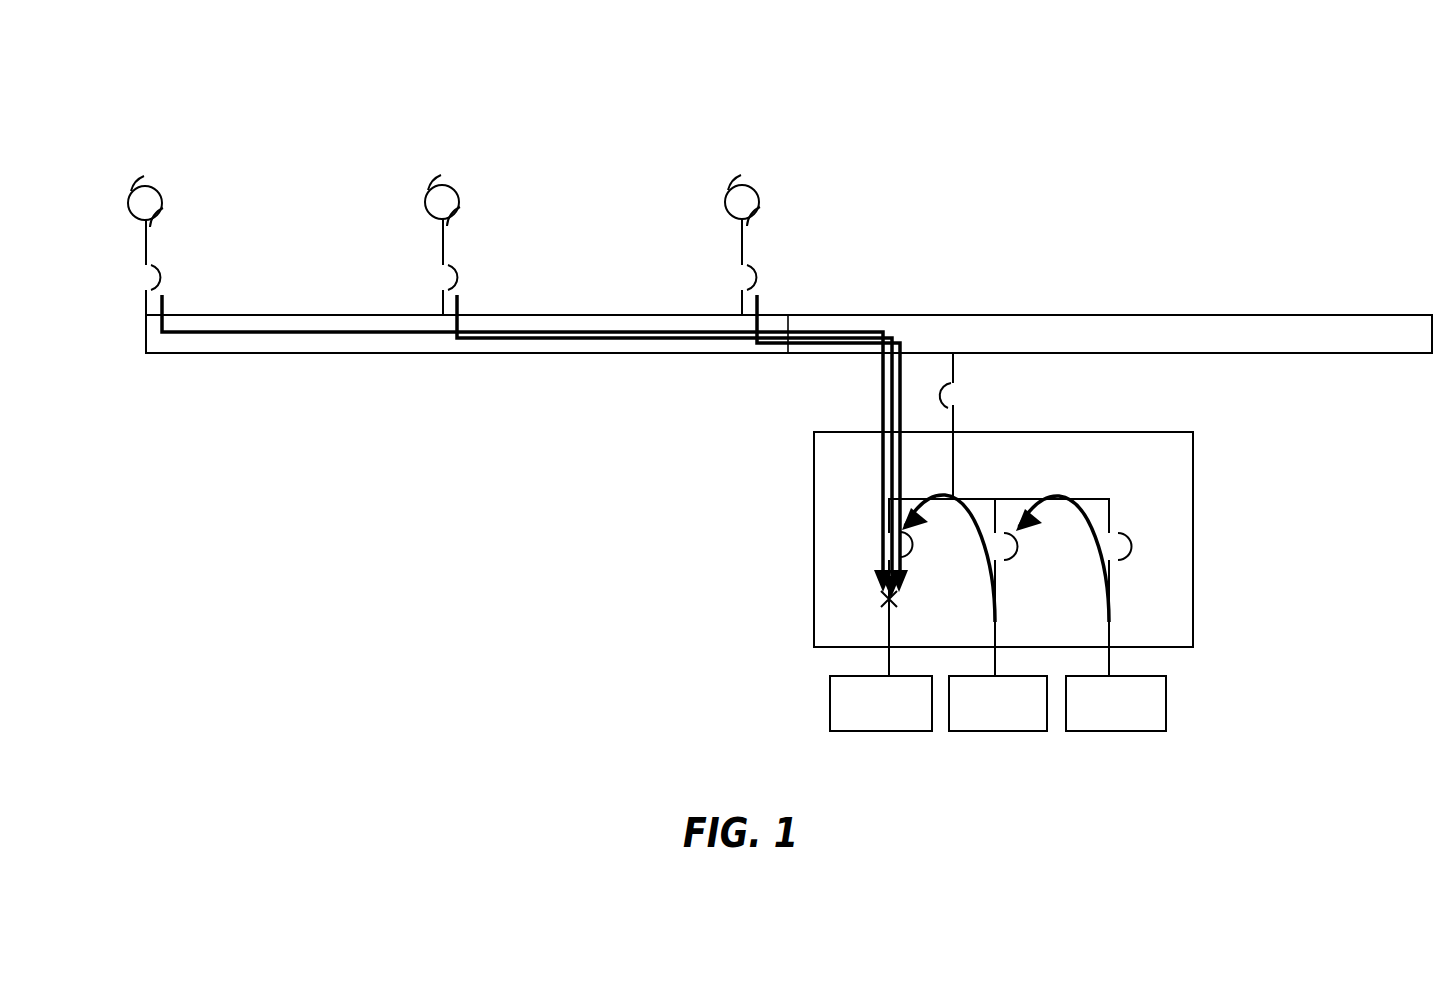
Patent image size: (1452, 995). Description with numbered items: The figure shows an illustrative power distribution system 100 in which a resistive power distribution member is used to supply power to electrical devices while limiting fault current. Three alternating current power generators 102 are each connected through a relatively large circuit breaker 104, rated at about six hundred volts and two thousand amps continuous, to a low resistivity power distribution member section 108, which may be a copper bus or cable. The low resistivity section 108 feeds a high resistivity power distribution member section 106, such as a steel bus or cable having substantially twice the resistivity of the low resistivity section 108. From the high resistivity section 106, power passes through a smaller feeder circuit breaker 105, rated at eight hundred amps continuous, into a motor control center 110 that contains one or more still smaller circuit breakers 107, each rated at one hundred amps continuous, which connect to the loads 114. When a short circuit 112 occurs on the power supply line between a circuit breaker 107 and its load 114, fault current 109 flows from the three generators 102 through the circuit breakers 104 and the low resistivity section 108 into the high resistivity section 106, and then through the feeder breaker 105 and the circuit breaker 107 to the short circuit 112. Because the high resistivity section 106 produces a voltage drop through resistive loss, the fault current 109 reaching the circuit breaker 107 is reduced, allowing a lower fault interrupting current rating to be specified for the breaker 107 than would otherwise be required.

The power distribution system 100 is at (1084, 81).
The power generator 102 is at (158, 196).
The circuit breaker 104 is at (164, 272).
The feeder circuit breaker 105 is at (955, 406).
The high resistivity power distribution member section 106 is at (1058, 316).
The circuit breaker 107 is at (913, 547).
The low resistivity power distribution member section 108 is at (502, 345).
The fault current 109 is at (603, 323).
The motor control center 110 is at (1185, 483).
The short circuit 112 is at (889, 599).
The load 114 is at (836, 690).